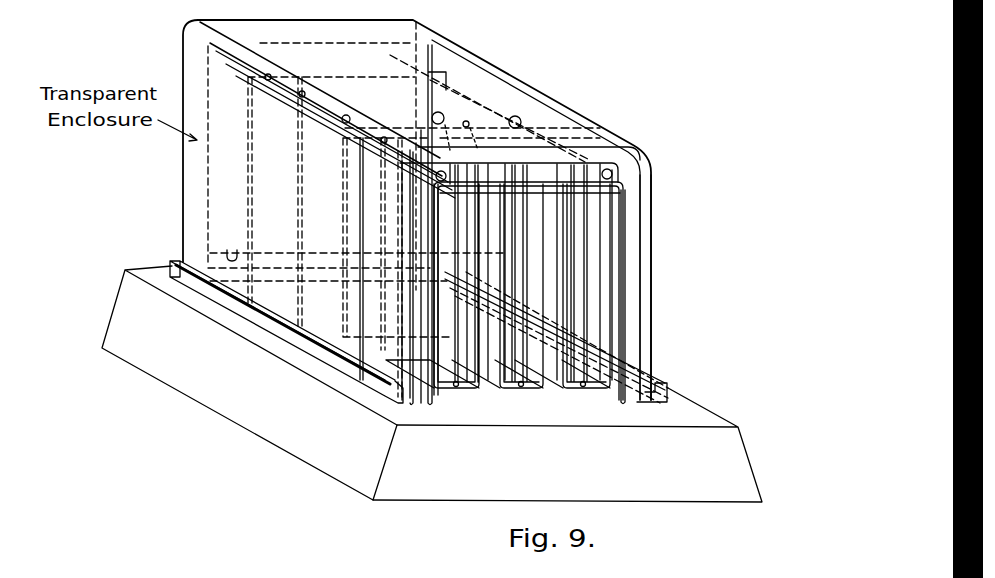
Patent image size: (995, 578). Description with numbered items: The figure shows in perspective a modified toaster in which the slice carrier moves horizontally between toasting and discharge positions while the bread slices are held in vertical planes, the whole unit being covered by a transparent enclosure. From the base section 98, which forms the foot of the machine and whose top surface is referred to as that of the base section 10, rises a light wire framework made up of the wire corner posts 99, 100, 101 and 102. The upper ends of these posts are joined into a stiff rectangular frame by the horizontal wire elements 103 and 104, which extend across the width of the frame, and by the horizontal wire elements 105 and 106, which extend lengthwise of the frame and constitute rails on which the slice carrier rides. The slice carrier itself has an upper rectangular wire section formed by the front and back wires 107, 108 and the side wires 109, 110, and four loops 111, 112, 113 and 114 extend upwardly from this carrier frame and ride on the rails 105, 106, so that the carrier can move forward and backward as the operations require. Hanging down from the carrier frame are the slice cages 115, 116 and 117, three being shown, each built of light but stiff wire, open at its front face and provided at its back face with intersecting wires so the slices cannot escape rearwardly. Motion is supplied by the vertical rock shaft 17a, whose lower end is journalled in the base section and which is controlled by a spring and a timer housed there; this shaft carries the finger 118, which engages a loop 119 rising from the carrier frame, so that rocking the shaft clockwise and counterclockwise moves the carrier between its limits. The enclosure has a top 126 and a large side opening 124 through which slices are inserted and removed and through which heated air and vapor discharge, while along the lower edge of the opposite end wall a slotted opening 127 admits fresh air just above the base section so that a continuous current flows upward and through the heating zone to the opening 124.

The base section 10 is at (233, 436).
The vertical rock shaft 17a is at (298, 215).
The base section 98 is at (225, 390).
The wire corner post 99 is at (624, 305).
The wire corner post 100 is at (470, 128).
The wire corner post 101 is at (403, 373).
The wire corner post 102 is at (250, 188).
The horizontal wire element 103 is at (573, 176).
The horizontal wire element 104 is at (210, 59).
The horizontal wire element 105 is at (547, 83).
The horizontal wire element 106 is at (445, 125).
The front wire 107 is at (592, 203).
The back wire 108 is at (475, 135).
The side wire 109 is at (567, 183).
The side wire 110 is at (364, 107).
The loop 111 is at (612, 174).
The loop 112 is at (570, 97).
The loop 113 is at (468, 133).
The loop 114 is at (338, 96).
The slice cage 115 is at (458, 390).
The slice cage 116 is at (518, 390).
The slice cage 117 is at (579, 390).
The finger 118 is at (364, 116).
The loop 119 is at (443, 225).
The enclosure opening 124 is at (640, 270).
The top 126 is at (461, 125).
The slotted opening 127 is at (228, 255).